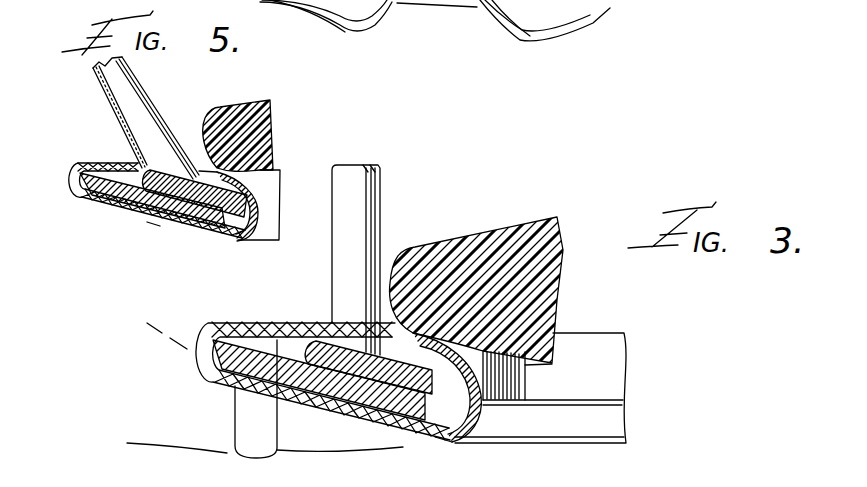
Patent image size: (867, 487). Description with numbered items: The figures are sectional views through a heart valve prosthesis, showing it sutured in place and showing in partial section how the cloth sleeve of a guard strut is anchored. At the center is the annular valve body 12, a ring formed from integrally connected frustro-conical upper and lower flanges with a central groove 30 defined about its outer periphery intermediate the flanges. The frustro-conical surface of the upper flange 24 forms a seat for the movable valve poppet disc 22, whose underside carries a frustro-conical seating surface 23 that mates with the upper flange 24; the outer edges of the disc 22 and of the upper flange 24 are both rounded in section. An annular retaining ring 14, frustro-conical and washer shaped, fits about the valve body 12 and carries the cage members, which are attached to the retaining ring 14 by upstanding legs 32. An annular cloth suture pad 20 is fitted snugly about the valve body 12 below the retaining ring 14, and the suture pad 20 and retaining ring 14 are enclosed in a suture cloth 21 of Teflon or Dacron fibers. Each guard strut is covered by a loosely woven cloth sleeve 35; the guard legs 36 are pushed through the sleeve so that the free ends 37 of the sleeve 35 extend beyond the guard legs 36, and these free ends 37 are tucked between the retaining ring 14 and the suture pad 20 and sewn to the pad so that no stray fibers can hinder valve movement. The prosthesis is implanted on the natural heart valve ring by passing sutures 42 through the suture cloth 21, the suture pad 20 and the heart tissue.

In FIG. 5, the valve body 12 is at (281, 169).
In FIG. 3, the valve body 12 is at (598, 333).
In FIG. 5, the retaining ring 14 is at (180, 227).
In FIG. 3, the retaining ring 14 is at (322, 322).
In FIG. 5, the suture pad 20 is at (207, 232).
In FIG. 3, the suture pad 20 is at (423, 432).
In FIG. 5, the suture cloth 21 is at (82, 163).
In FIG. 3, the suture cloth 21 is at (220, 323).
In FIG. 5, the valve poppet disc 22 is at (262, 82).
In FIG. 3, the valve poppet disc 22 is at (538, 218).
In FIG. 3, the frustro-conical seating surface 23 is at (530, 367).
In FIG. 3, the upper flange 24 is at (383, 318).
In FIG. 3, the central groove 30 is at (480, 400).
In FIG. 3, the upstanding legs 32 is at (340, 208).
In FIG. 5, the cloth sleeve 35 is at (122, 117).
In FIG. 5, the guard legs 36 is at (120, 91).
In FIG. 5, the free ends of the cloth sleeve 37 is at (147, 222).
In FIG. 3, the sutures 42 is at (276, 443).